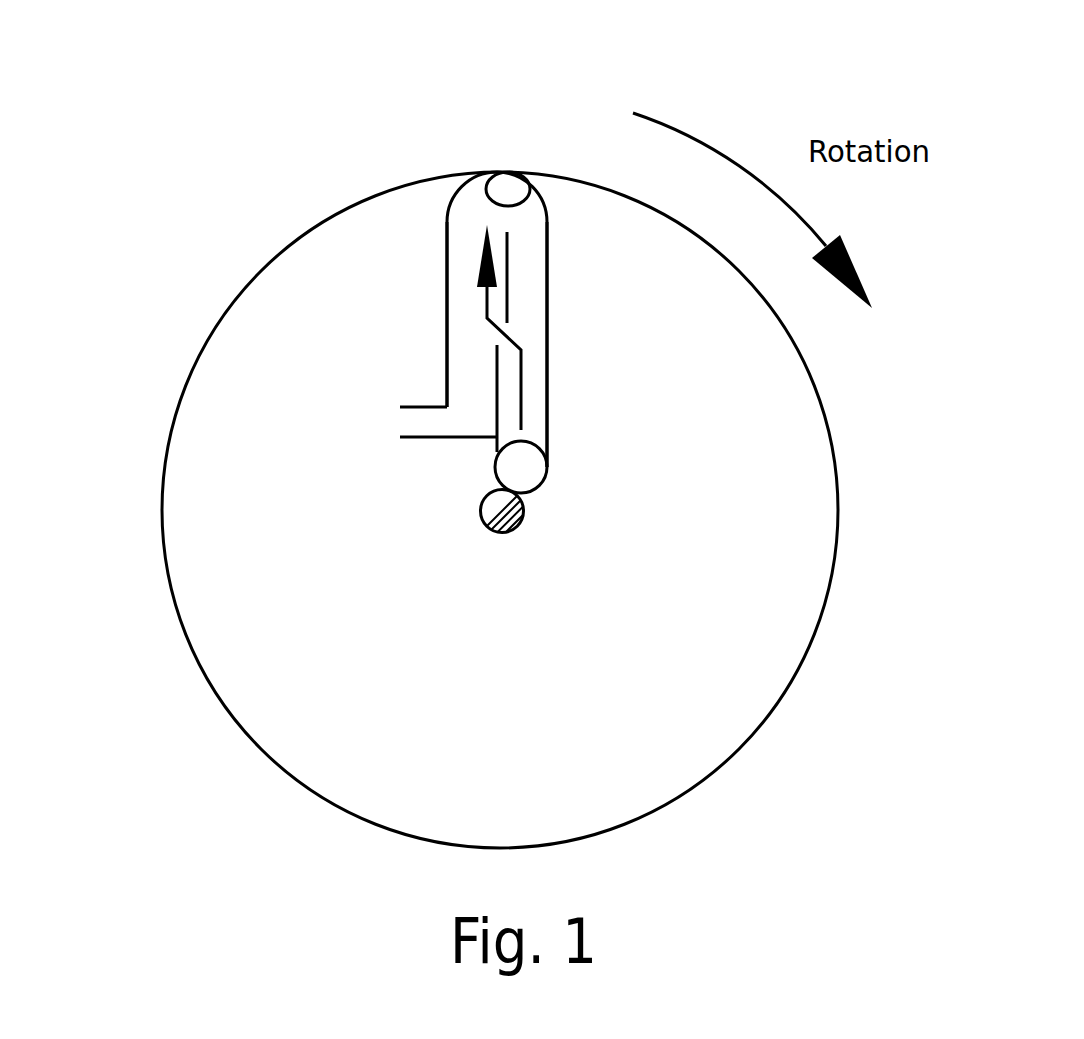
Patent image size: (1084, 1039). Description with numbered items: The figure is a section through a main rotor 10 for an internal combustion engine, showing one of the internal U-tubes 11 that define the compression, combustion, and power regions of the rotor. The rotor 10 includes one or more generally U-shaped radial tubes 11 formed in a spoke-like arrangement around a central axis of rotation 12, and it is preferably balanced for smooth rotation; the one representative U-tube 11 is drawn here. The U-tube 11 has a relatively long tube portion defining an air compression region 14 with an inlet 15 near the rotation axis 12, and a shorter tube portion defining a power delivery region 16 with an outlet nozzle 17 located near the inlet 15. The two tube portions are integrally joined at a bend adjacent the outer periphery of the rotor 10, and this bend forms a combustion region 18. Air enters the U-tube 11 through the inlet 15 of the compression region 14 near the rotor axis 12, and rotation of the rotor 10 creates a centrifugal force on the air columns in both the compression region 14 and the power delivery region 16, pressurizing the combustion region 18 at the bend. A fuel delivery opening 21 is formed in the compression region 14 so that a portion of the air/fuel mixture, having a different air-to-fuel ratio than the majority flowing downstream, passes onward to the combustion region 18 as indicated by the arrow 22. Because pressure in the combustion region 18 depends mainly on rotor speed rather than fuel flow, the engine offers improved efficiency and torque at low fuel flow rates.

The rotor 10 is at (205, 262).
The U-tube 11 is at (586, 412).
The central axis of rotation 12 is at (493, 533).
The air compression region 14 is at (547, 328).
The inlet 15 is at (492, 487).
The power delivery region 16 is at (447, 282).
The outlet nozzle 17 is at (410, 440).
The combustion region 18 is at (492, 173).
The fuel delivery opening 21 is at (507, 323).
The arrow 22 is at (487, 310).